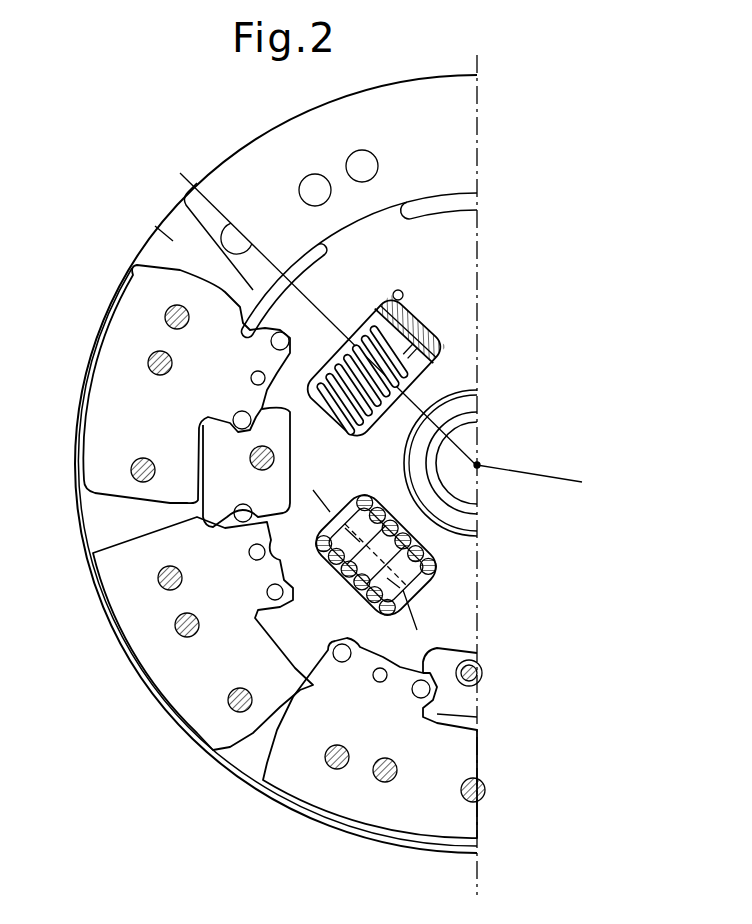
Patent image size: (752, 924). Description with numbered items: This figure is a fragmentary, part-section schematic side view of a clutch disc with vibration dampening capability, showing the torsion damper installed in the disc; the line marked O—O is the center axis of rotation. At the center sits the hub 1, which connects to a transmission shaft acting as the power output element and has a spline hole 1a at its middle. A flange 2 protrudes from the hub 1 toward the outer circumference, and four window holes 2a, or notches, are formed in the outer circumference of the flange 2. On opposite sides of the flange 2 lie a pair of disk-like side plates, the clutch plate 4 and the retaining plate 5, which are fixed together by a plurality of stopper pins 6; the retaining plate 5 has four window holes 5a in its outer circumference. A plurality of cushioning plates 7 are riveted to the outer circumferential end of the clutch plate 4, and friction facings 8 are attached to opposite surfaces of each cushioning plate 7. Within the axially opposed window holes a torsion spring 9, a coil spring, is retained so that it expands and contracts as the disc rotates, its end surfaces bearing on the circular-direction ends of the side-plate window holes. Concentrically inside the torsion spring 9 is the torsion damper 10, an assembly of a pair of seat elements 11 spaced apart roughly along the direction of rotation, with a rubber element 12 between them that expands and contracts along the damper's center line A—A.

The hub 1 is at (468, 404).
The spline hole 1a is at (460, 423).
The flange 2 is at (427, 555).
The window holes 2a is at (376, 555).
The clutch plate 4 is at (284, 645).
The retaining plate 5 is at (441, 288).
The window holes 5a is at (433, 340).
The stopper pins 6 is at (480, 665).
The cushioning plates 7 is at (448, 762).
The friction facings 8 is at (233, 183).
The torsion spring 9 is at (376, 555).
The torsion damper 10 is at (396, 534).
The seat elements 11 is at (355, 575).
The rubber element 12 is at (376, 555).